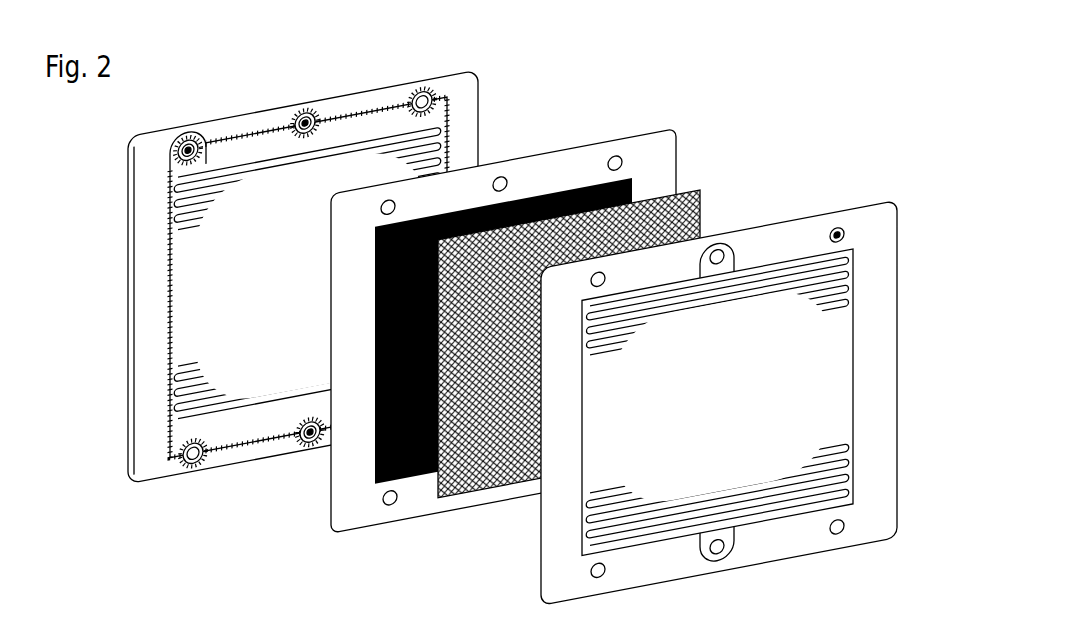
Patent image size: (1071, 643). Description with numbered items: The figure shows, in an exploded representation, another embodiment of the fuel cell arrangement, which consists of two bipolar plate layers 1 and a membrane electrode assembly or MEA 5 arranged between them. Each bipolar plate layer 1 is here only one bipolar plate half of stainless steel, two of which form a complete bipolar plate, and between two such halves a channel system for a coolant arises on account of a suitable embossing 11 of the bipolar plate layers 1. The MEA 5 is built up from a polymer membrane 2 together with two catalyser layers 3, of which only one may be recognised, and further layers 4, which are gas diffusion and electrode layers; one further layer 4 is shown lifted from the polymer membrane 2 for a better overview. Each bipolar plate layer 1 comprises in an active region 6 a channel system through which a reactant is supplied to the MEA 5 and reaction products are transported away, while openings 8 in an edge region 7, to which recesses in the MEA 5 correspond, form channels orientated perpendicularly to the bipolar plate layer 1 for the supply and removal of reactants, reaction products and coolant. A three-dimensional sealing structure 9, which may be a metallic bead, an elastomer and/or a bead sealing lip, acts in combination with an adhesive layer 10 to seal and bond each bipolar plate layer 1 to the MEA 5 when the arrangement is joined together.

The bipolar plate layer 1 is at (688, 337).
The polymer membrane 2 is at (360, 510).
The catalyser layer 3 is at (406, 462).
The further layer 4 is at (488, 467).
The membrane electrode assembly (MEA) 5 is at (527, 376).
The active region 6 is at (307, 273).
The edge region 7 is at (268, 313).
The openings 8 is at (300, 113).
The three-dimensional sealing structure 9 is at (308, 270).
The adhesive layer 10 is at (308, 270).
The embossing 11 is at (763, 283).